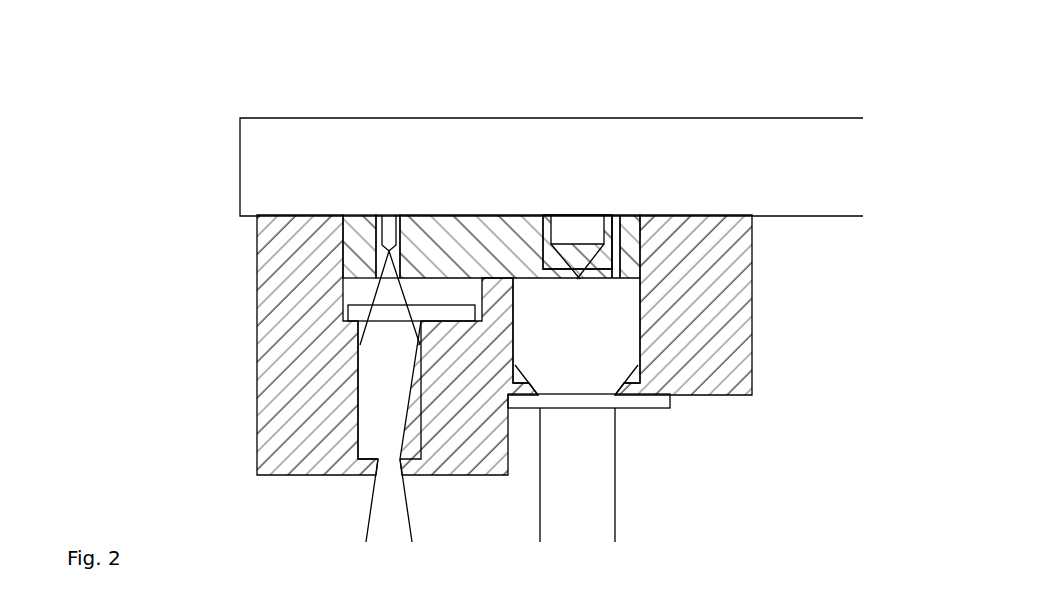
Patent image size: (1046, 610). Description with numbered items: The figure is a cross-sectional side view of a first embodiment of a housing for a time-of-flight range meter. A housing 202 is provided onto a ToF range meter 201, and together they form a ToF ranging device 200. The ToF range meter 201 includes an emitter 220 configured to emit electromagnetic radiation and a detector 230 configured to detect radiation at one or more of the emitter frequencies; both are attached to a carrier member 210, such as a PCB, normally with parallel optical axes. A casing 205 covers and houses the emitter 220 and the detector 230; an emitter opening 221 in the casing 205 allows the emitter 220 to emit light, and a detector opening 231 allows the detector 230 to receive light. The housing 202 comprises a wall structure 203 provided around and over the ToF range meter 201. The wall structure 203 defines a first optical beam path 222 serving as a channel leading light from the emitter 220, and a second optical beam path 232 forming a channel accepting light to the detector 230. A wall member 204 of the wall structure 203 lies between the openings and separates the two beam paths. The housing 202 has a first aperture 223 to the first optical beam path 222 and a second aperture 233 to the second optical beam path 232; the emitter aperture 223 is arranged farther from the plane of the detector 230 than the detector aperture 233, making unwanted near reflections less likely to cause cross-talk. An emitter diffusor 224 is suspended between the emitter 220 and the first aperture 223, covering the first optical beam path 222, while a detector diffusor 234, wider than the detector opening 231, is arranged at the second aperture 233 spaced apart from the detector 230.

The ToF ranging device 200 is at (792, 48).
The carrier member 210 is at (801, 160).
The ToF range meter 201 is at (488, 255).
The housing 202 is at (163, 233).
The wall structure 203 is at (268, 380).
The wall member 204 is at (500, 298).
The casing 205 is at (350, 263).
The emitter 220 is at (385, 220).
The emitter opening 221 is at (388, 278).
The first optical beam path 222 is at (406, 426).
The first aperture 223 is at (390, 460).
The emitter diffusor 224 is at (380, 308).
The detector 230 is at (567, 225).
The detector opening 231 is at (578, 272).
The second optical beam path 232 is at (591, 360).
The second aperture 233 is at (585, 387).
The detector diffusor 234 is at (560, 400).